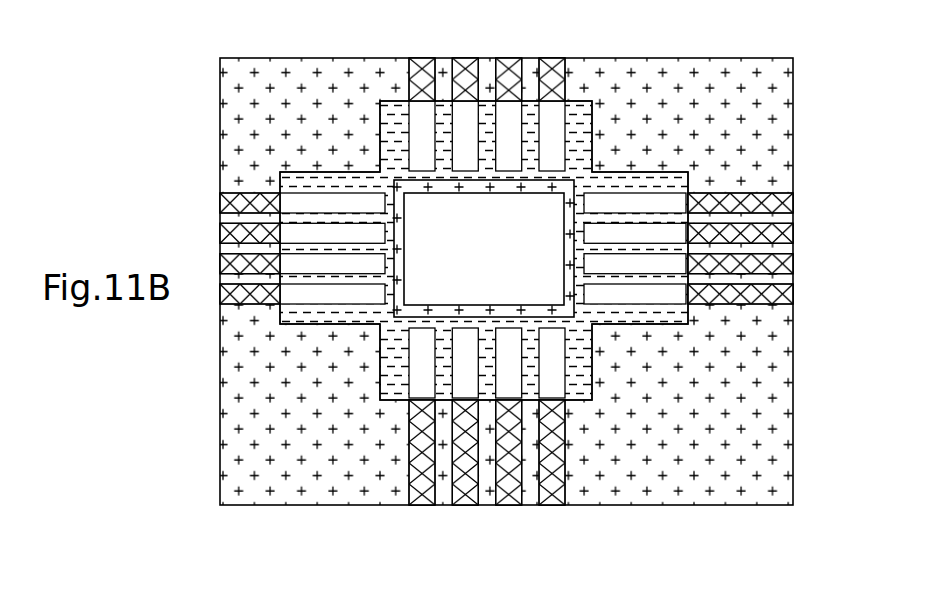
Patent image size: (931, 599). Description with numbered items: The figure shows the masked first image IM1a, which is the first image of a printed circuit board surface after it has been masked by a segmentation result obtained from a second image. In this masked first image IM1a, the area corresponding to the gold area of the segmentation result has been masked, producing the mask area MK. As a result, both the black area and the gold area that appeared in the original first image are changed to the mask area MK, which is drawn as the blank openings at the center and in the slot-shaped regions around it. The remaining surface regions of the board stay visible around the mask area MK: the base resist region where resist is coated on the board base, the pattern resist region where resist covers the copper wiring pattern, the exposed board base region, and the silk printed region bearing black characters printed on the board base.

The masked first image IM1a is at (748, 58).
The mask area MK is at (417, 158).